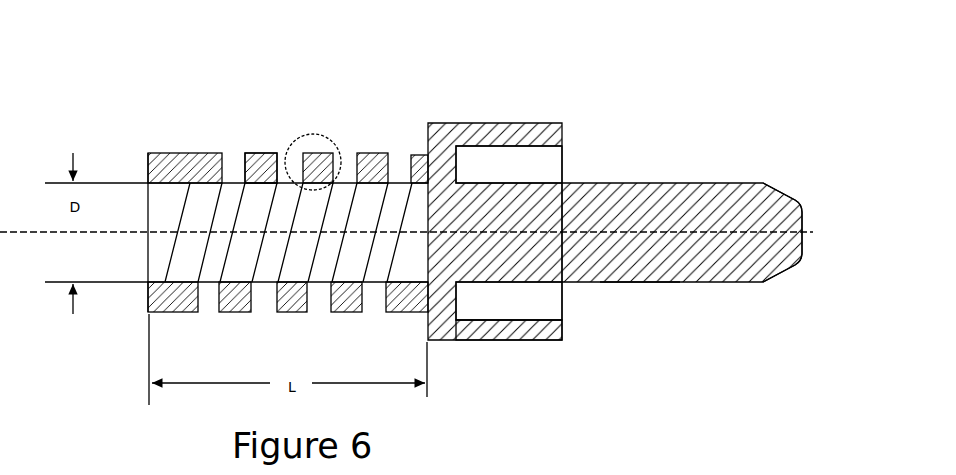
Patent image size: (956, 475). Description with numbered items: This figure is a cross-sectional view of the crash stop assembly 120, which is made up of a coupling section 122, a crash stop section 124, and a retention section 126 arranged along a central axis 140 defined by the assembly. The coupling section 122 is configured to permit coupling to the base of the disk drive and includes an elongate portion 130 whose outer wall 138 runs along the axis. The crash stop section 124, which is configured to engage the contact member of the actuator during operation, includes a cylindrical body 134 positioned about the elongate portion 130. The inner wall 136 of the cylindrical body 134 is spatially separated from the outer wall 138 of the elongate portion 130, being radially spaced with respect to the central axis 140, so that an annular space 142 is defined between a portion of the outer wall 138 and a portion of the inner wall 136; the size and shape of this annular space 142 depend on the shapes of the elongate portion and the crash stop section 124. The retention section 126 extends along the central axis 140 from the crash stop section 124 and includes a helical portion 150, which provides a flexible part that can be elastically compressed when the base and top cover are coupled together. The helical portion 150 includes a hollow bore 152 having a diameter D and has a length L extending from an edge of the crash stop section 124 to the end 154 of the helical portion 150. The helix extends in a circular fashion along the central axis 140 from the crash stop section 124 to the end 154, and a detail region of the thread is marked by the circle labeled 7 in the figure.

The crash stop assembly 120 is at (375, 92).
The coupling section 122 is at (687, 167).
The crash stop section 124 is at (475, 350).
The retention section 126 is at (278, 122).
The elongate portion 130 is at (620, 203).
The cylindrical body 134 is at (523, 330).
The inner wall 136 is at (523, 330).
The outer wall 138 is at (630, 282).
The central axis 140 is at (116, 232).
The annular space 142 is at (481, 160).
The helical portion 150 is at (250, 158).
The hollow bore 152 is at (145, 197).
The end of the helical portion 154 is at (199, 312).
The detail view circle 7 is at (339, 175).